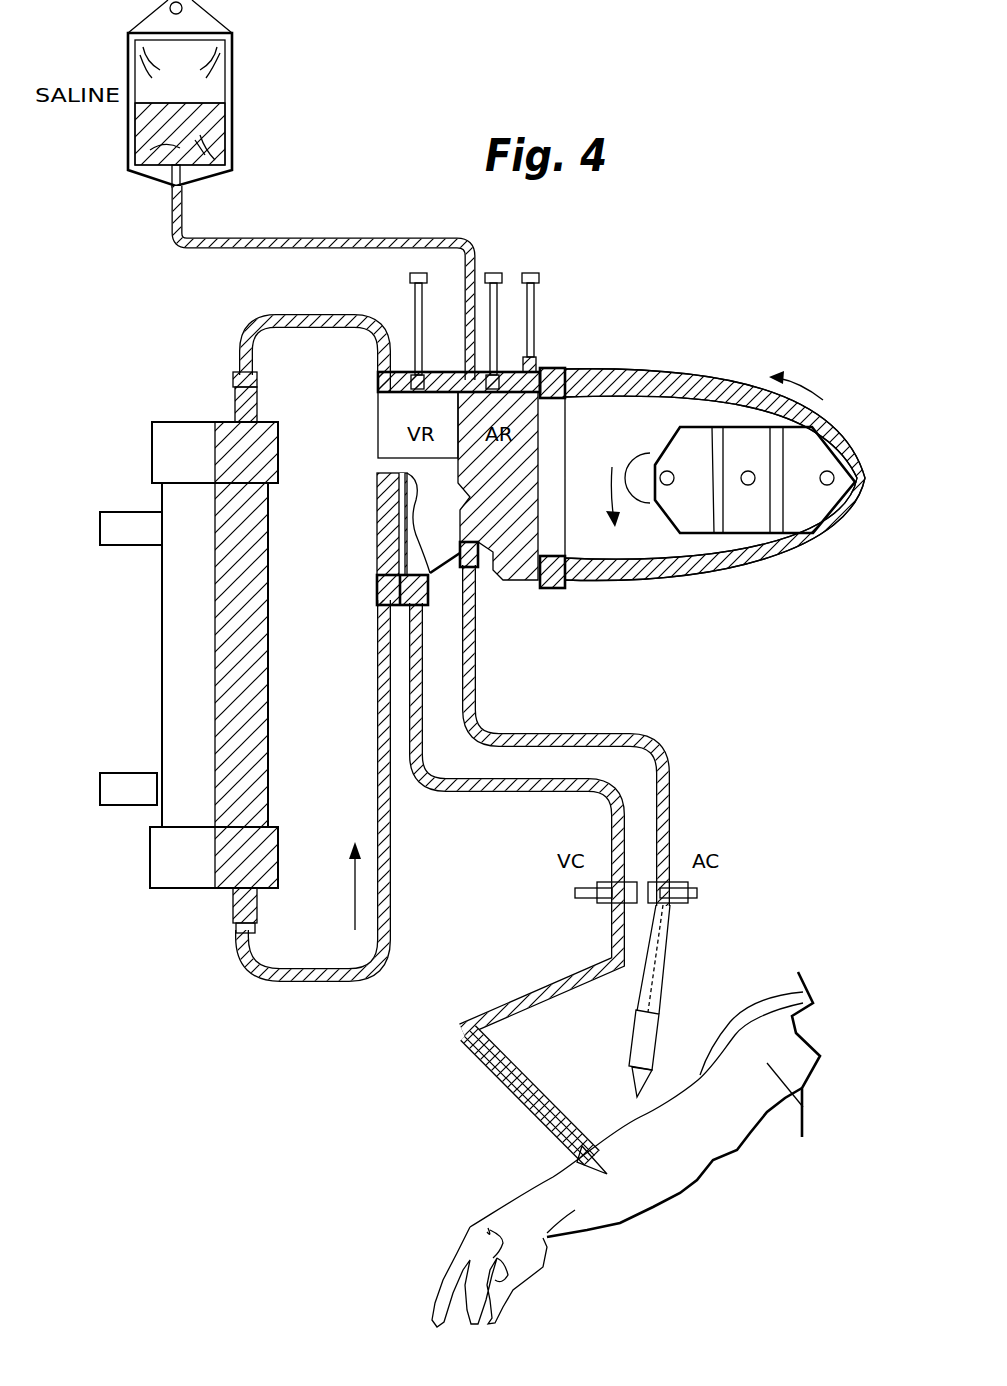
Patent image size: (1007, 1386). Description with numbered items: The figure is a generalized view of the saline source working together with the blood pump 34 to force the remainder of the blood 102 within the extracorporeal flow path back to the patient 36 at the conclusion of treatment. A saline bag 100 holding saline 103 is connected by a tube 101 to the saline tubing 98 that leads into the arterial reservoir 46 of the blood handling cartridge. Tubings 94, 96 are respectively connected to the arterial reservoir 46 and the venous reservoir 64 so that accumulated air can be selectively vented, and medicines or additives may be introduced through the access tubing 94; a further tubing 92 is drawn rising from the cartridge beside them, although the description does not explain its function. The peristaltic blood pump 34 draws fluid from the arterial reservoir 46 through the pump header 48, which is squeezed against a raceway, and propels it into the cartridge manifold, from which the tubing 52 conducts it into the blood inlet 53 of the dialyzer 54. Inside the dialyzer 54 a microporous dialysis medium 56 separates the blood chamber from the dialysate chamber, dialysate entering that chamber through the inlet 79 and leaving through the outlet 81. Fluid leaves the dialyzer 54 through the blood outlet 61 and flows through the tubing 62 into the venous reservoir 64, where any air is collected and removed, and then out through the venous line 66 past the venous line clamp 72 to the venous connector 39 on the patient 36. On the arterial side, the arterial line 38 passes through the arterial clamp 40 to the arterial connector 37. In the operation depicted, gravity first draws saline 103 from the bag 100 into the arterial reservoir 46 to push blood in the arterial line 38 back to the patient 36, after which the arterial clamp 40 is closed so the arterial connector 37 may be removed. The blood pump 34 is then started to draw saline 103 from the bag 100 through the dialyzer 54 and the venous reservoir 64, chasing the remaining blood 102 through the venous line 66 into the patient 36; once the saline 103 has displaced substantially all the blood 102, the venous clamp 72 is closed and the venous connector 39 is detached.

The saline bag 100 is at (232, 103).
The saline 103 is at (197, 143).
The tube 101 is at (237, 238).
The saline tubing 98 is at (467, 297).
The tubing 52 is at (252, 330).
The blood inlet 53 is at (232, 405).
The tubing 96 is at (412, 298).
The tubing 94 is at (503, 280).
The valve pin 92 is at (540, 325).
The pump header 48 is at (640, 371).
The blood pump 34 is at (805, 543).
The arterial reservoir 46 is at (508, 470).
The venous reservoir 64 is at (425, 495).
The dialysis medium 56 is at (210, 630).
The outlet 81 is at (148, 545).
The inlet 79 is at (135, 773).
The dialyzer 54 is at (278, 738).
The blood outlet 61 is at (250, 902).
The tubing 62 is at (280, 985).
The arterial line 38 is at (603, 733).
The venous line 66 is at (548, 793).
The venous line clamp 72 is at (582, 897).
The arterial clamp 40 is at (698, 893).
The arterial connector 37 is at (640, 1052).
The blood 102 is at (525, 1105).
The venous connector 39 is at (565, 1147).
The patient 36 is at (640, 1195).